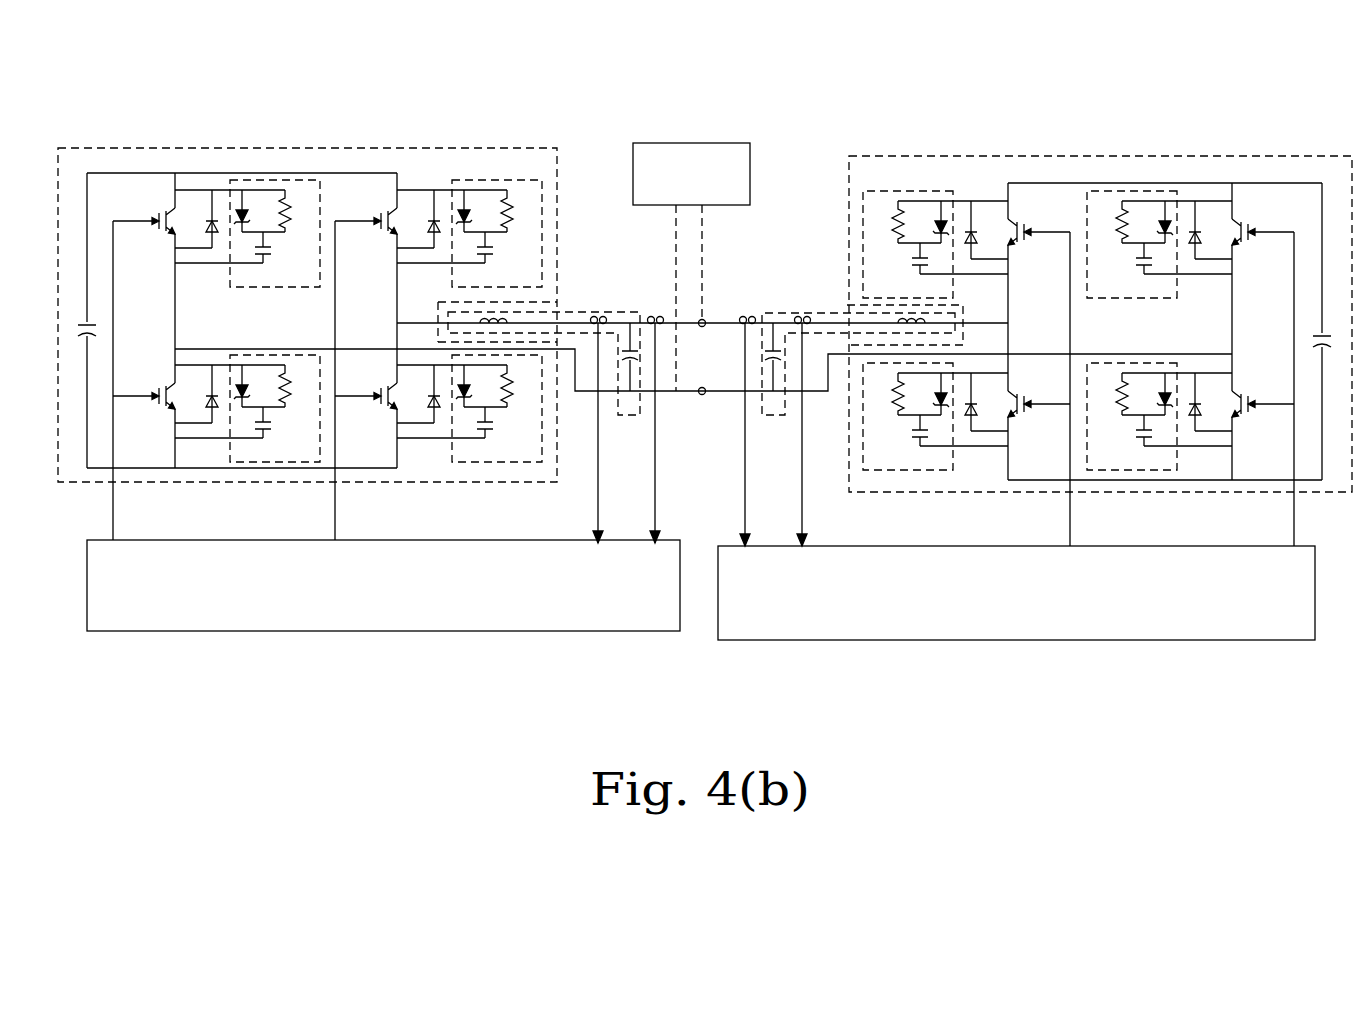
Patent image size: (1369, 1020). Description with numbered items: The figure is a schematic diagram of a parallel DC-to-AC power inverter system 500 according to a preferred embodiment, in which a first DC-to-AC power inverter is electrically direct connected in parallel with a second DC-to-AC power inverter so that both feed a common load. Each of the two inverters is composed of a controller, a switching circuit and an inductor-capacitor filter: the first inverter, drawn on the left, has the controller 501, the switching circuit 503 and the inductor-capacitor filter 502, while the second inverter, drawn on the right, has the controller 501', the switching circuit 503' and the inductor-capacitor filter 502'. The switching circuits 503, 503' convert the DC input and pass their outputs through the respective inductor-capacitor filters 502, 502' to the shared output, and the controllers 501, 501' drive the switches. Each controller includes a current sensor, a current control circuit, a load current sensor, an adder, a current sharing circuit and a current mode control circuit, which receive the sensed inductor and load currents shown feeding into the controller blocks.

The parallel DC-to-AC power inverter system 500 is at (1256, 130).
The controller 501 is at (383, 622).
The controller 501' is at (1016, 625).
The inductor-capacitor filter 502 is at (551, 333).
The inductor-capacitor filter 502' is at (852, 333).
The switching circuit 503 is at (339, 344).
The switching circuit 503' is at (1060, 351).